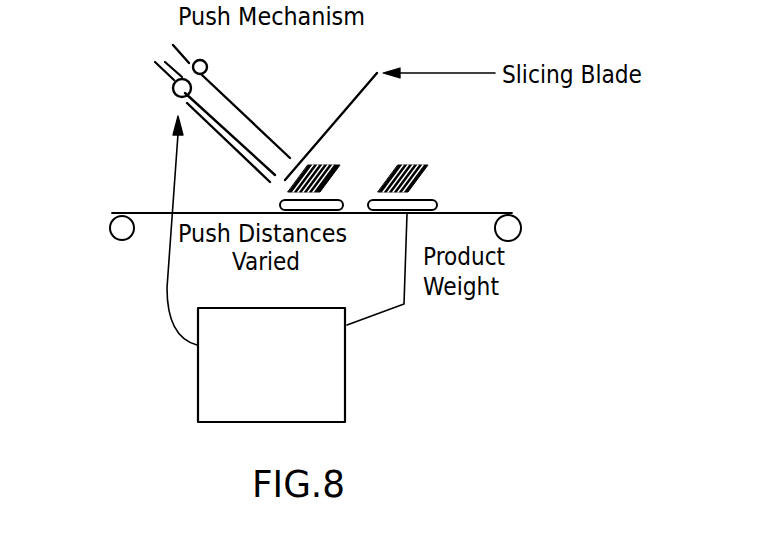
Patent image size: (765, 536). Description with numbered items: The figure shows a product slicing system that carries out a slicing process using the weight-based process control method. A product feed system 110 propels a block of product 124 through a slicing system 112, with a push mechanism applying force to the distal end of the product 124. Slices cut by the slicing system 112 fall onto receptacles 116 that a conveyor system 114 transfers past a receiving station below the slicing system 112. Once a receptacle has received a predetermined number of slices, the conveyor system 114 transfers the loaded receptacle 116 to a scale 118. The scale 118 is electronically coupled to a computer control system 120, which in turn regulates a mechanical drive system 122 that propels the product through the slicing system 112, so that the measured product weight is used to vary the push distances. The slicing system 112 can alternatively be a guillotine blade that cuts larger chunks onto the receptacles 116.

The product feed system 110 is at (171, 89).
The slicing system 112 is at (572, 93).
The conveyor system 114 is at (145, 223).
The receptacles 116 is at (339, 201).
The scale 118 is at (437, 203).
The computer control system 120 is at (328, 365).
The mechanical drive system 122 is at (188, 50).
The block of product 124 is at (238, 121).